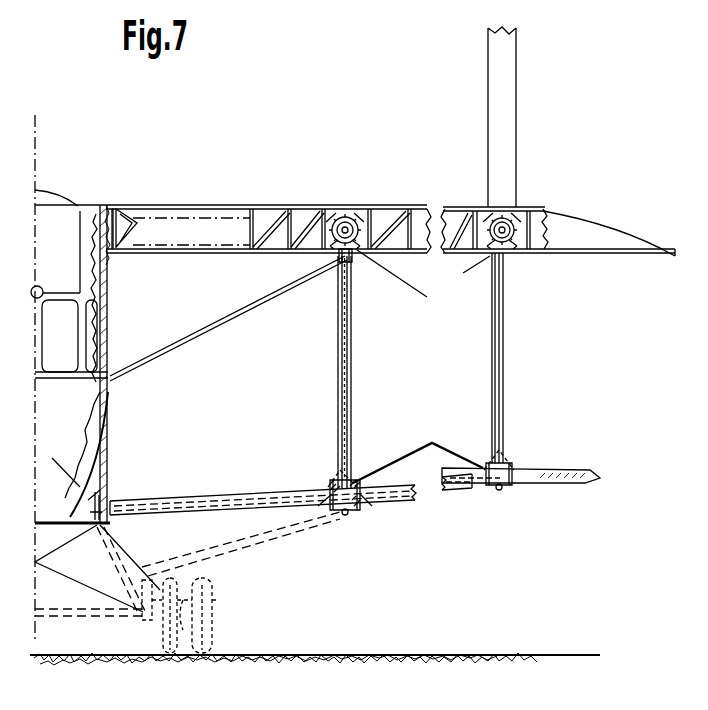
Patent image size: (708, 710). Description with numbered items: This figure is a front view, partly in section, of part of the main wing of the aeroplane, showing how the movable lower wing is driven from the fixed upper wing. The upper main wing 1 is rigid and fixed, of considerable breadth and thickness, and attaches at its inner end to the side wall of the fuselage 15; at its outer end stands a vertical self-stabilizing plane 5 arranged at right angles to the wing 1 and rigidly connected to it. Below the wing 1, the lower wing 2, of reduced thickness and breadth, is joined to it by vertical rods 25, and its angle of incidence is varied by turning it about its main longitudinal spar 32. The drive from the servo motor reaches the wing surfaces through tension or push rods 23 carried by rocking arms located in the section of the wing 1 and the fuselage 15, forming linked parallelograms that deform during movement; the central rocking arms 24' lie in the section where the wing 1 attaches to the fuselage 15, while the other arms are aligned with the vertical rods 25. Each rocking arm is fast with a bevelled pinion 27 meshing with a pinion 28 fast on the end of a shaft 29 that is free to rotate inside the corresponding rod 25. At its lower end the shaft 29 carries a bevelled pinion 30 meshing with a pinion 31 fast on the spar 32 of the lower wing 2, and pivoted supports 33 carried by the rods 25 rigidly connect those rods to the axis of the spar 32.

The upper main wing 1 is at (178, 214).
The lower wing 2 is at (195, 501).
The vertical plane 5 is at (505, 98).
The fuselage 15 is at (45, 408).
The tension or push rod 23 is at (110, 334).
The central rocking arm 24' is at (116, 214).
The vertical rod 25 is at (350, 362).
The bevelled pinion 27 is at (362, 228).
The pinion 28 is at (356, 258).
The shaft 29 is at (346, 337).
The bevelled pinion 30 is at (360, 483).
The pinion 31 is at (336, 509).
The main longitudinal spar 32 is at (363, 505).
The pivoted support 33 is at (346, 516).